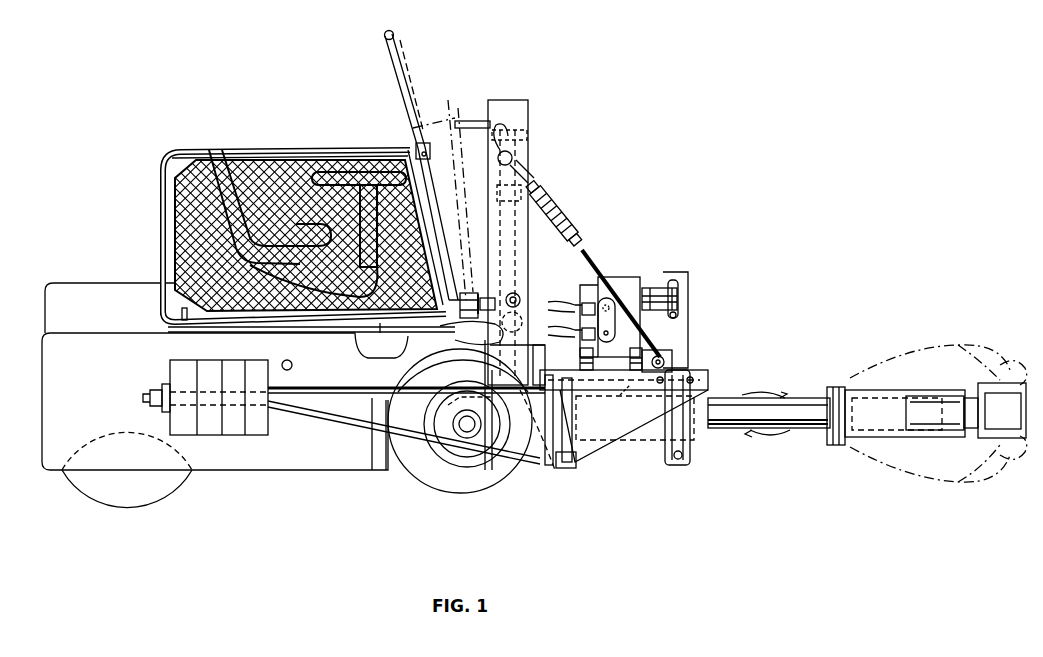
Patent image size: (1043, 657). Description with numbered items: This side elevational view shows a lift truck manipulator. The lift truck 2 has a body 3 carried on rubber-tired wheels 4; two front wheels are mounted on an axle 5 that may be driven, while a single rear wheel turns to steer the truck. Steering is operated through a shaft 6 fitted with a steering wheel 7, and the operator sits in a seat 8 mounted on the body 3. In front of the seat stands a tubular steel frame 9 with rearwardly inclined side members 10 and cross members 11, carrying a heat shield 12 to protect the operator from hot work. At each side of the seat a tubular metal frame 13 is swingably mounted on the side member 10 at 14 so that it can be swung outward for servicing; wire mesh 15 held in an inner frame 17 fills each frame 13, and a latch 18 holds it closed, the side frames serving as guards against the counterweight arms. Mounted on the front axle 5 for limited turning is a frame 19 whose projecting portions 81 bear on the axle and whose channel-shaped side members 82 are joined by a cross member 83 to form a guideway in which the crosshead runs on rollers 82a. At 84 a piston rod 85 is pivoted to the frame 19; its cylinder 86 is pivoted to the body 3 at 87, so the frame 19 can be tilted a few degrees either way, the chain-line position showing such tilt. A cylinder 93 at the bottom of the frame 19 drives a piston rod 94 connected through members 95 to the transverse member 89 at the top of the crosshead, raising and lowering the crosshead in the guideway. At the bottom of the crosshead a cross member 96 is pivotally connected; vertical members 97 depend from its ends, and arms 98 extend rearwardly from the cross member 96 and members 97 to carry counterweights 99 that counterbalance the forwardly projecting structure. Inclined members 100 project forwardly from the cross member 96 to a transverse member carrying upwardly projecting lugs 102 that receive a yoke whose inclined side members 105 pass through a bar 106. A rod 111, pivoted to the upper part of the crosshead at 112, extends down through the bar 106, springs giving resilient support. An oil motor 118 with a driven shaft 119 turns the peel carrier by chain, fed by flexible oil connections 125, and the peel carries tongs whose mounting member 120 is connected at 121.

The lift truck 2 is at (304, 472).
The body 3 is at (44, 350).
The wheels 4 is at (85, 490).
The axle 5 is at (467, 432).
The shaft 6 is at (368, 185).
The steering wheel 7 is at (350, 172).
The seat 8 is at (282, 152).
The tubular steel frame 9 is at (440, 225).
The side members 10 is at (443, 246).
The cross members 11 is at (384, 35).
The heat shield 12 is at (402, 40).
The tubular metal frame 13 is at (160, 232).
The swing mounting 14 is at (432, 148).
The wire mesh 15 is at (180, 190).
The inner frame 17 is at (193, 160).
The latch 18 is at (181, 316).
The frame 19 is at (520, 295).
The projecting portions 81 is at (505, 455).
The side members 82 is at (528, 100).
The rollers 82a is at (490, 334).
The cross member 83 is at (462, 110).
The pivotal connection 84 is at (522, 300).
The piston rod 85 is at (487, 296).
The cylinder 86 is at (440, 330).
The pivot 87 is at (393, 335).
The transverse member 89 is at (528, 122).
The cylinder 93 is at (537, 348).
The piston rod 94 is at (497, 192).
The members 95 is at (530, 148).
The cross member 96 is at (570, 468).
The vertical members 97 is at (578, 448).
The arms 98 is at (384, 470).
The counterweights 99 is at (240, 436).
The inclined members 100 is at (634, 423).
The lugs 102 is at (685, 372).
The side members 105 is at (598, 256).
The bar 106 is at (600, 213).
The rod 111 is at (533, 175).
The pivotal connection 112 is at (500, 120).
The oil motor 118 is at (618, 285).
The driven shaft 119 is at (651, 292).
The mounting member 120 is at (868, 390).
The connection 121 is at (830, 388).
The flexible oil connections 125 is at (548, 328).